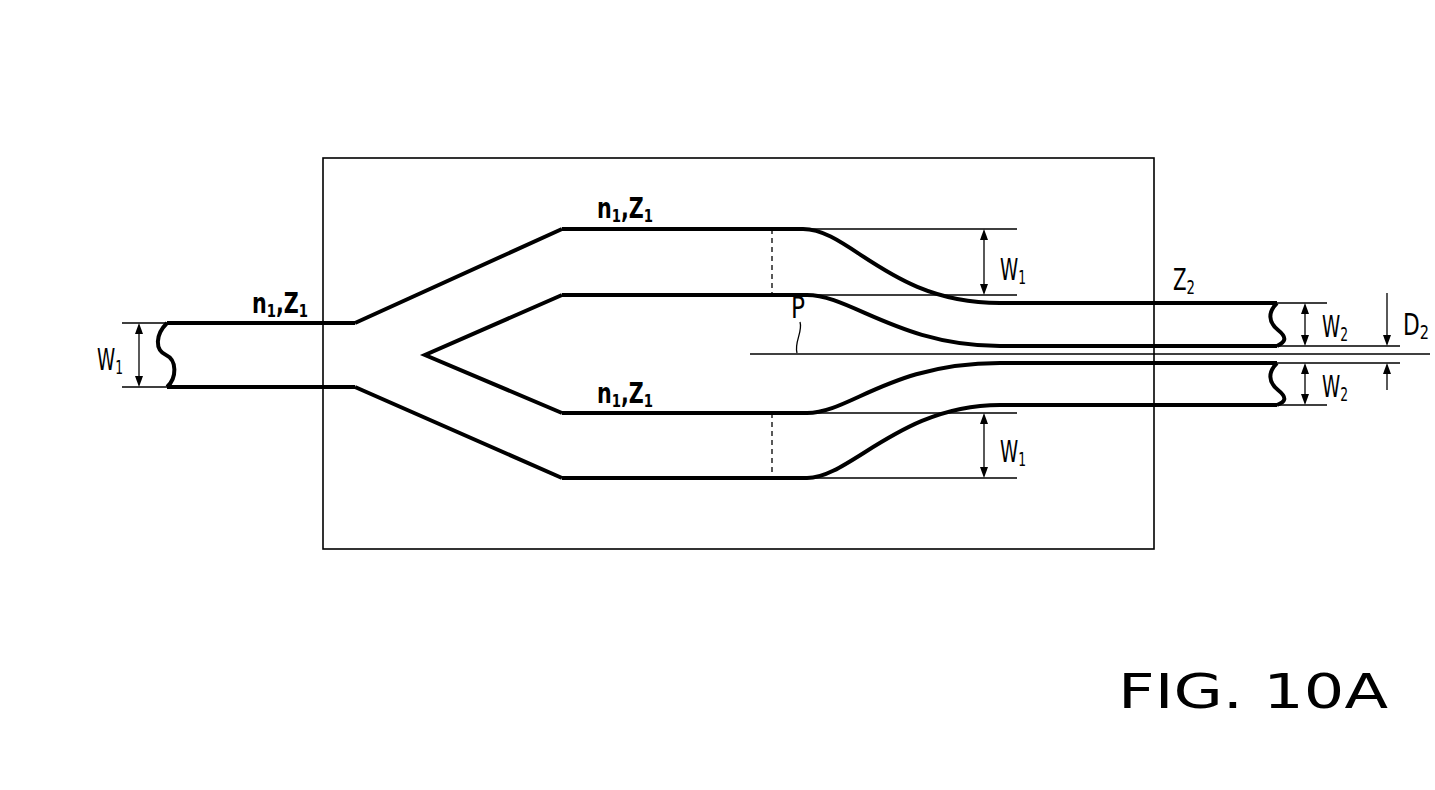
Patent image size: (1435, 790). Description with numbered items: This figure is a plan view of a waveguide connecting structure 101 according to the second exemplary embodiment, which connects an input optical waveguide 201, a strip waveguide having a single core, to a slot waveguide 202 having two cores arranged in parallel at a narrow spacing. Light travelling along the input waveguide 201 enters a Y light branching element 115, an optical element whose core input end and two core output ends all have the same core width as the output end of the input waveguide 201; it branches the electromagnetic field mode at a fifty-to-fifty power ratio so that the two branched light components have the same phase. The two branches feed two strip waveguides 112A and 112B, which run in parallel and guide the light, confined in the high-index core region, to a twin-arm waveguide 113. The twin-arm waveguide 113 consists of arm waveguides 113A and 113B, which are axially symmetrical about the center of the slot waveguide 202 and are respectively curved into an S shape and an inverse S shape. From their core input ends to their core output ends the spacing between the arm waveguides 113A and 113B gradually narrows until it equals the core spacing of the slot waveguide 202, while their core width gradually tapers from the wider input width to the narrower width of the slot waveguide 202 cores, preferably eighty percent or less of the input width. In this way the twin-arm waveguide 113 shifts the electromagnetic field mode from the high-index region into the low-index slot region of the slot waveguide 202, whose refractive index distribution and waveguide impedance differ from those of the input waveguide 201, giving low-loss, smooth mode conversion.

The waveguide connecting structure 101 is at (1065, 158).
The input optical waveguide 201 is at (197, 320).
The Y light branching element 115 is at (480, 258).
The strip waveguide 112A is at (685, 229).
The strip waveguide 112B is at (725, 410).
The twin-arm waveguide 113 is at (1020, 56).
The arm waveguide 113A is at (870, 250).
The arm waveguide 113B is at (922, 370).
The slot waveguide 202 is at (1242, 300).